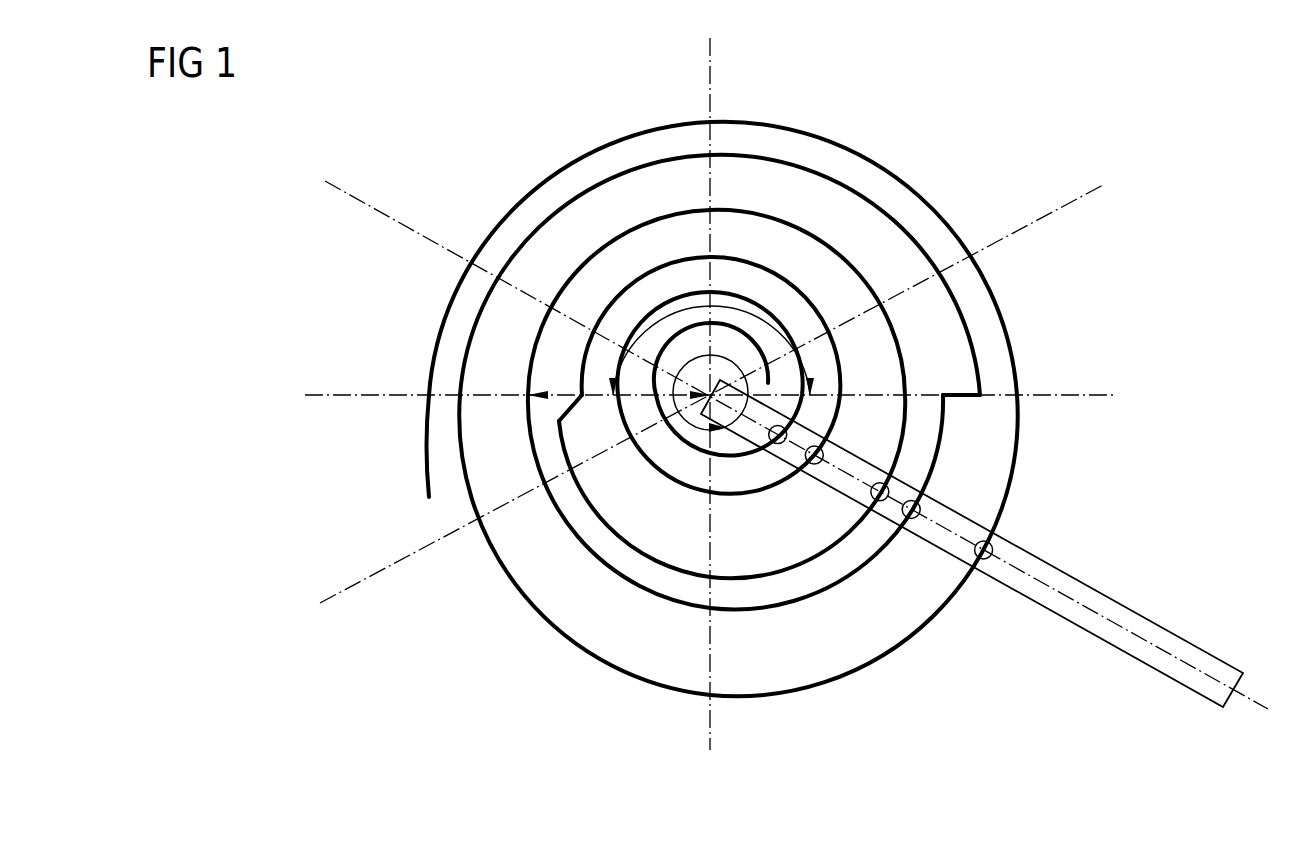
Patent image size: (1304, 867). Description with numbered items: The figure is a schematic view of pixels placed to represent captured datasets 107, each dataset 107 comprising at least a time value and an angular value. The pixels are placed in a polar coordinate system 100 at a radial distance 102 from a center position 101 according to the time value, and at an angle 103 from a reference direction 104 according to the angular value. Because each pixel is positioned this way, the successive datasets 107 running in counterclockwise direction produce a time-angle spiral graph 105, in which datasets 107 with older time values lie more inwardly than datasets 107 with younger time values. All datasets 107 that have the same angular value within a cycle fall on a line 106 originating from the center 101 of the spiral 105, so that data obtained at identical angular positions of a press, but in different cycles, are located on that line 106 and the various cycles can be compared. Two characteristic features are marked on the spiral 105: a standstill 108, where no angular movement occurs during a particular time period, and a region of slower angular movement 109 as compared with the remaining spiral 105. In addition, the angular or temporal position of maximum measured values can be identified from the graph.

The polar coordinate system 100 is at (713, 406).
The center position 101 is at (710, 395).
The radial distance 102 is at (594, 398).
The angle 103 is at (762, 300).
The reference direction 104 is at (1105, 395).
The time-angle spiral graph 105 is at (428, 375).
The line 106 is at (1120, 622).
The datasets 107 is at (985, 559).
The standstill 108 is at (972, 408).
The slower angular movement 109 is at (577, 418).